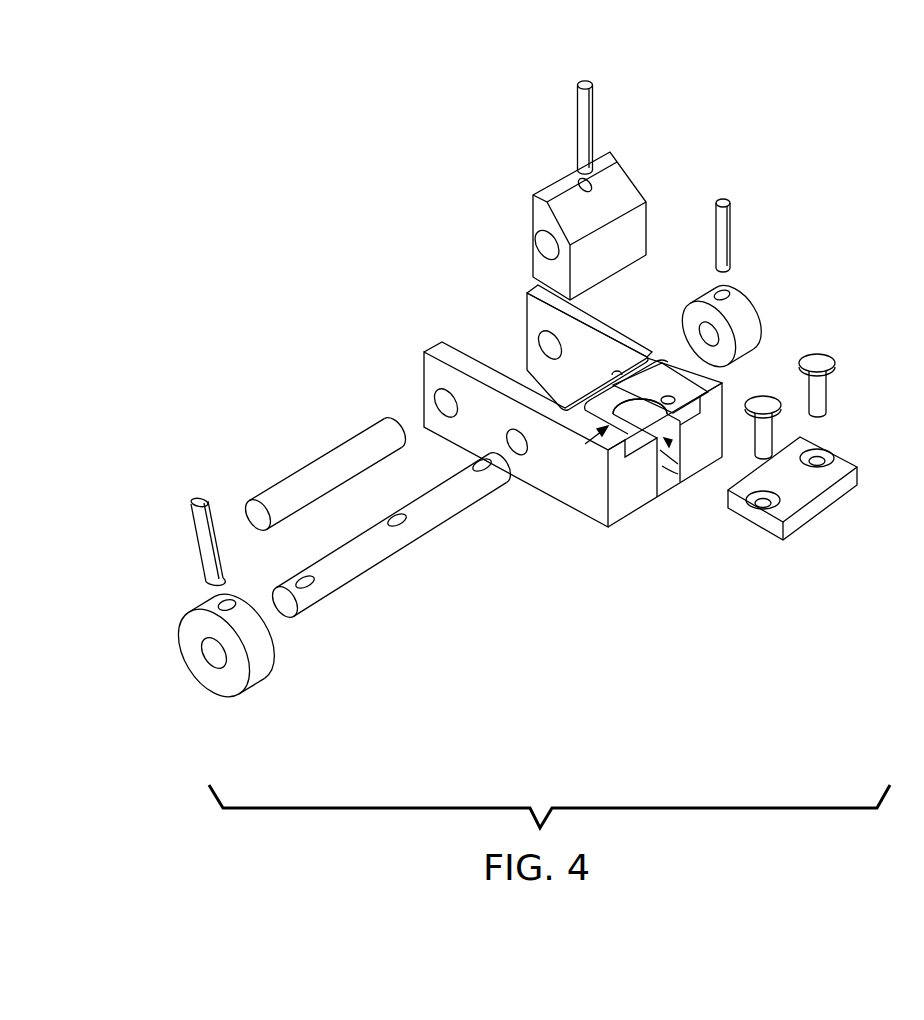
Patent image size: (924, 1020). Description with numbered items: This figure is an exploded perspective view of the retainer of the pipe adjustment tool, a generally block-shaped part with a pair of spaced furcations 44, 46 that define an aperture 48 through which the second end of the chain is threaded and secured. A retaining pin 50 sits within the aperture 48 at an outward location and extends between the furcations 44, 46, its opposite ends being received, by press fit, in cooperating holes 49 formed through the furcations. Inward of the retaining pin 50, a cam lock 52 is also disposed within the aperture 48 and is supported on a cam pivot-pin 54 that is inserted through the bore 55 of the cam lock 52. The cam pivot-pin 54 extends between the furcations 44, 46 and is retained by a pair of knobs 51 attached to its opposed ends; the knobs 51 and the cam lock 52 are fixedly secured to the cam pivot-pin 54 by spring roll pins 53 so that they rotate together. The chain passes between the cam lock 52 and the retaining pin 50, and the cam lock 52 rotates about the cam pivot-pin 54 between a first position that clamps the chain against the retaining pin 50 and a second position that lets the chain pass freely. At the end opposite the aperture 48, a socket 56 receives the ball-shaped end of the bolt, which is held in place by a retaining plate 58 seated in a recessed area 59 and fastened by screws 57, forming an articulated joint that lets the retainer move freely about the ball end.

The furcation 44 is at (428, 350).
The furcation 46 is at (532, 290).
The aperture 48 is at (538, 322).
The holes 49 is at (437, 403).
The retaining pin 50 is at (316, 462).
The knobs 51 is at (762, 308).
The cam lock 52 is at (648, 193).
The spring roll pins 53 is at (593, 100).
The cam pivot-pin 54 is at (400, 567).
The bore 55 is at (533, 225).
The socket 56 is at (667, 441).
The screws 57 is at (773, 382).
The retaining plate 58 is at (815, 512).
The recessed area 59 is at (553, 340).